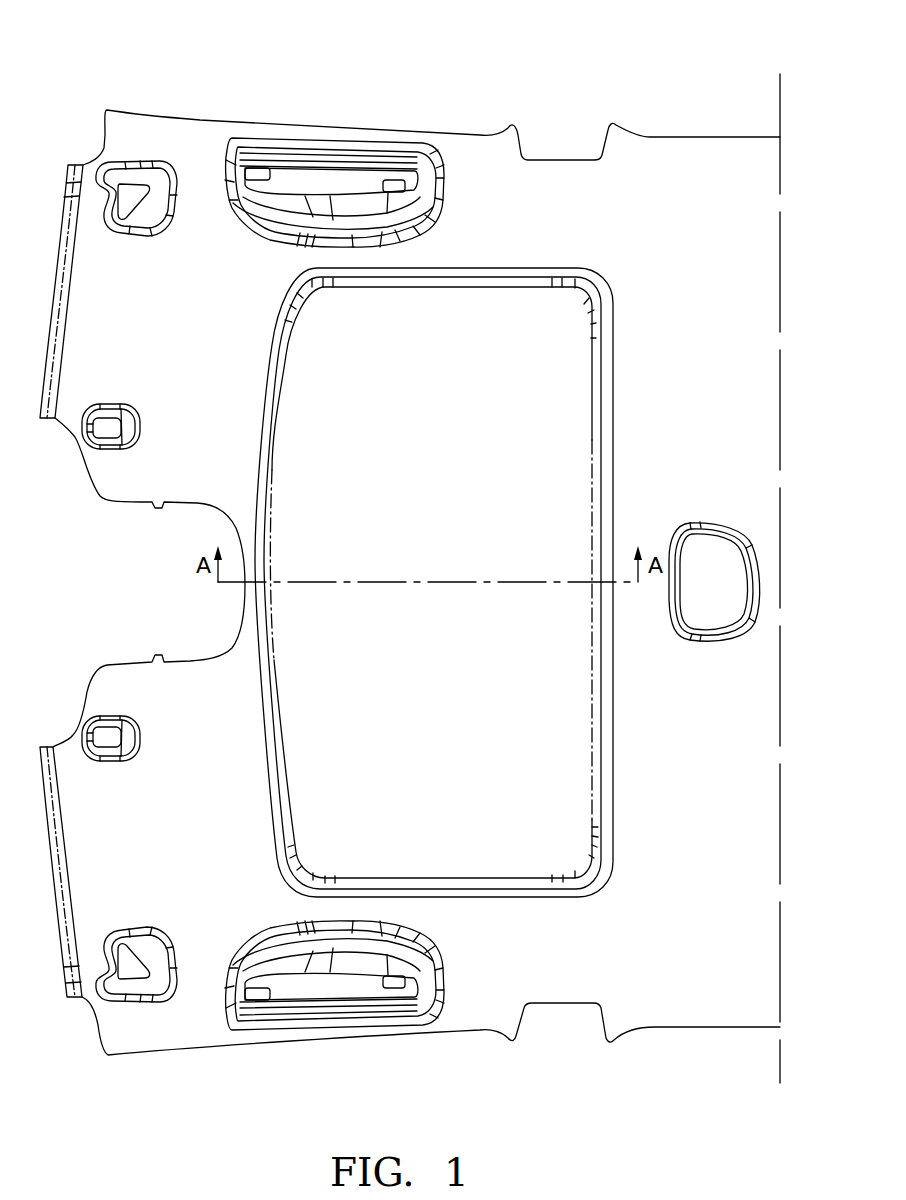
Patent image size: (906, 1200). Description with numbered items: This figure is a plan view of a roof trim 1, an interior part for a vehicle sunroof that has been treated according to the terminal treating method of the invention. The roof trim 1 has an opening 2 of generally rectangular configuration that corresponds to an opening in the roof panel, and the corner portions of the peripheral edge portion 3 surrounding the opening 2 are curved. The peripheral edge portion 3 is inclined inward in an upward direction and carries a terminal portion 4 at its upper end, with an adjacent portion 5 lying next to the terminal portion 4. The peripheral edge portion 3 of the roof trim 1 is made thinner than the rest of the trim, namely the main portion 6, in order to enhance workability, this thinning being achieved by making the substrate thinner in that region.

The roof trim 1 is at (679, 127).
The opening 2 is at (469, 495).
The peripheral edge portion 3 is at (607, 487).
The terminal portion 4 is at (598, 379).
The adjacent portion 5 is at (598, 430).
The main portion 6 is at (558, 197).